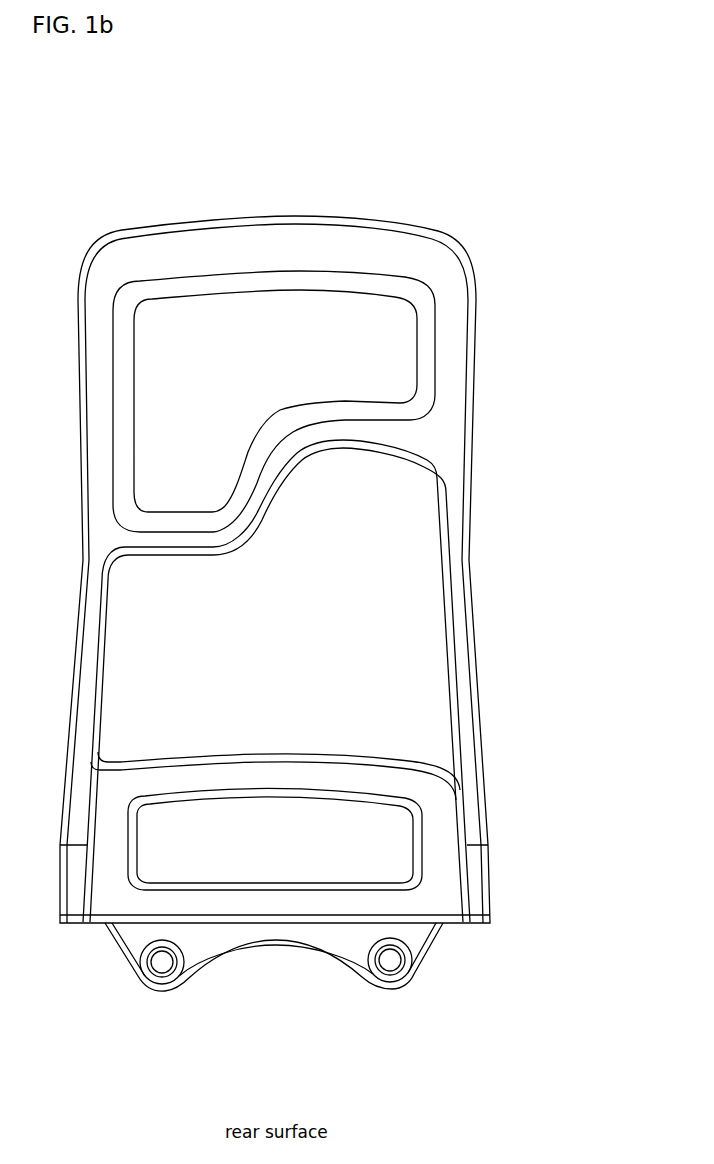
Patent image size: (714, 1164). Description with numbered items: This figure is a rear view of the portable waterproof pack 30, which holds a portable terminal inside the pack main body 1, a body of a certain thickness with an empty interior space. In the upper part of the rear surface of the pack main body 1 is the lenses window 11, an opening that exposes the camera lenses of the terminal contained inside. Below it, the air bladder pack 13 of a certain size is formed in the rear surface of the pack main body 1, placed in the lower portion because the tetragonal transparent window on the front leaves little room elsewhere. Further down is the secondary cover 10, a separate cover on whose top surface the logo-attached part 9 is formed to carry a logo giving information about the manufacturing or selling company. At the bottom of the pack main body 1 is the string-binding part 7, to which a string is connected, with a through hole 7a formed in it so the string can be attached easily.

The portable waterproof pack 30 is at (481, 188).
The pack main body 1 is at (453, 518).
The lenses window 11 is at (387, 360).
The air bladder pack 13 is at (425, 618).
The secondary cover 10 is at (430, 792).
The logo-attached part 9 is at (427, 820).
The string-binding part 7 is at (213, 940).
The through hole 7a is at (162, 962).